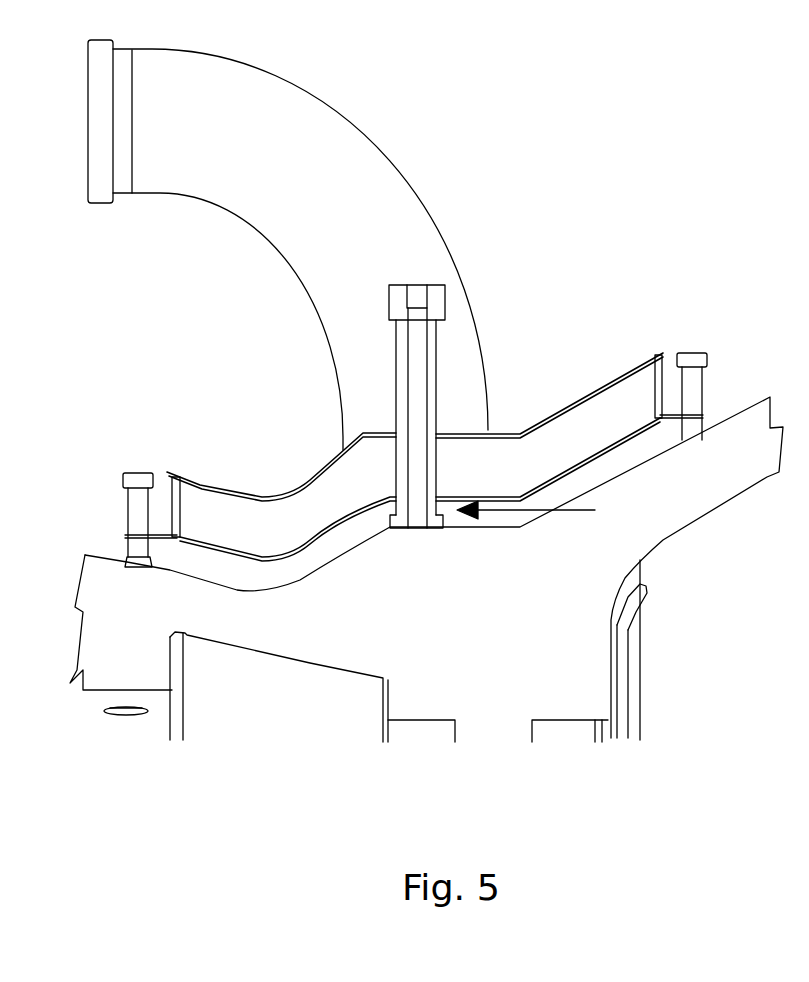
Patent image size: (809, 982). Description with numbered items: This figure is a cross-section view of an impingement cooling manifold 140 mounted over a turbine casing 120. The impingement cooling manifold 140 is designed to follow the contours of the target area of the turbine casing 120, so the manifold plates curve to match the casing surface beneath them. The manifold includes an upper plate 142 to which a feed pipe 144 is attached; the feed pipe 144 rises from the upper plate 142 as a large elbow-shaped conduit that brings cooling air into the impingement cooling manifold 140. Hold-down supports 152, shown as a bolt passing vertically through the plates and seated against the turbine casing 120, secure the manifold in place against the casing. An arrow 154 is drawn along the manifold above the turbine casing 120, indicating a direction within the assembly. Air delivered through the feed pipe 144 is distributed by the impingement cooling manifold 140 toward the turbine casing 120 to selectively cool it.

The turbine casing 120 is at (460, 596).
The impingement cooling manifold 140 is at (168, 498).
The upper plate 142 is at (580, 398).
The feed pipe 144 is at (342, 140).
The hold-down supports 152 is at (448, 277).
The direction arrow 154 is at (558, 513).